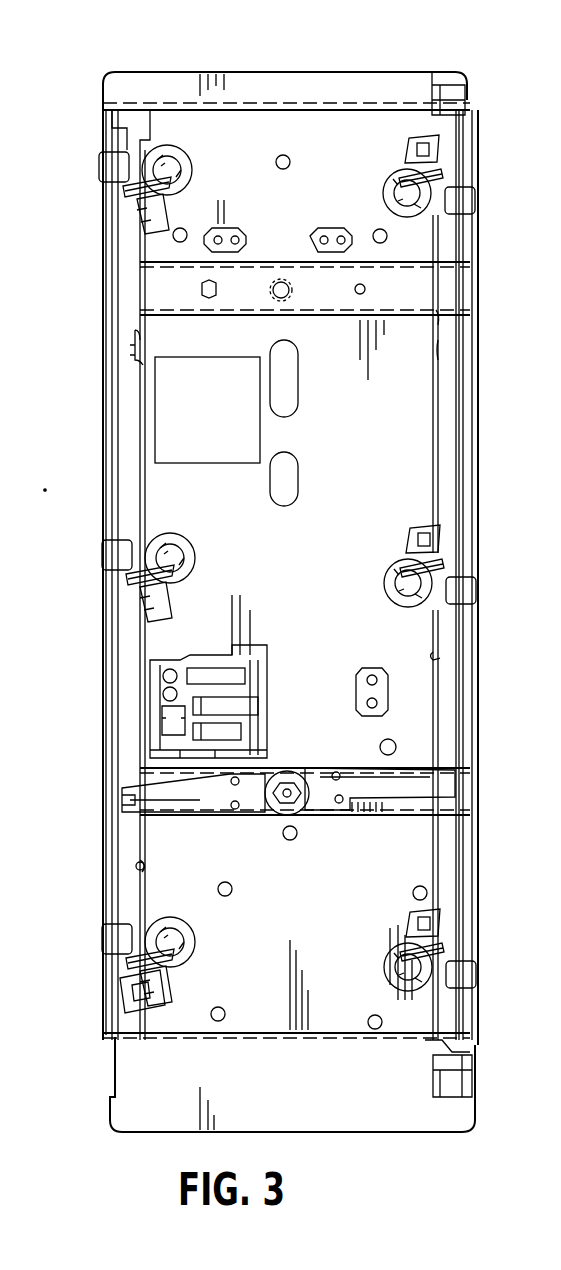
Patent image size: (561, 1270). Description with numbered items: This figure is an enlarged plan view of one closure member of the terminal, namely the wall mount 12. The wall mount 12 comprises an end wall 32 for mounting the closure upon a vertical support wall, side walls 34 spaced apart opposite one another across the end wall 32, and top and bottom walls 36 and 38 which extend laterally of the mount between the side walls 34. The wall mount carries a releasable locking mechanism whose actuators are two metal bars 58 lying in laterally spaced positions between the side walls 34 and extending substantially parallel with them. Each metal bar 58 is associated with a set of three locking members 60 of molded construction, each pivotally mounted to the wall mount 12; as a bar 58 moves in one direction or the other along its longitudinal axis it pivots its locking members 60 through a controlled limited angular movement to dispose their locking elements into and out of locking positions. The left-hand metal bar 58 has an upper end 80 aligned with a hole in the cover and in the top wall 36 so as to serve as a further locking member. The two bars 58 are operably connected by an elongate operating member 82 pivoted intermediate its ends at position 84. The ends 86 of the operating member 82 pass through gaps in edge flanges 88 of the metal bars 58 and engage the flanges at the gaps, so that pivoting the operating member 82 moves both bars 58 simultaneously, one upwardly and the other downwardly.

The wall mount 12 is at (490, 405).
The end wall 32 is at (392, 378).
The side walls 34 is at (100, 432).
The top wall 36 is at (365, 112).
The bottom wall 38 is at (352, 1033).
The metal bars 58 is at (125, 405).
The locking members 60 is at (385, 178).
The upper end 80 is at (135, 110).
The elongate operating member 82 is at (326, 820).
The pivot position 84 is at (298, 771).
The ends 86 is at (150, 803).
The edge flanges 88 is at (442, 658).